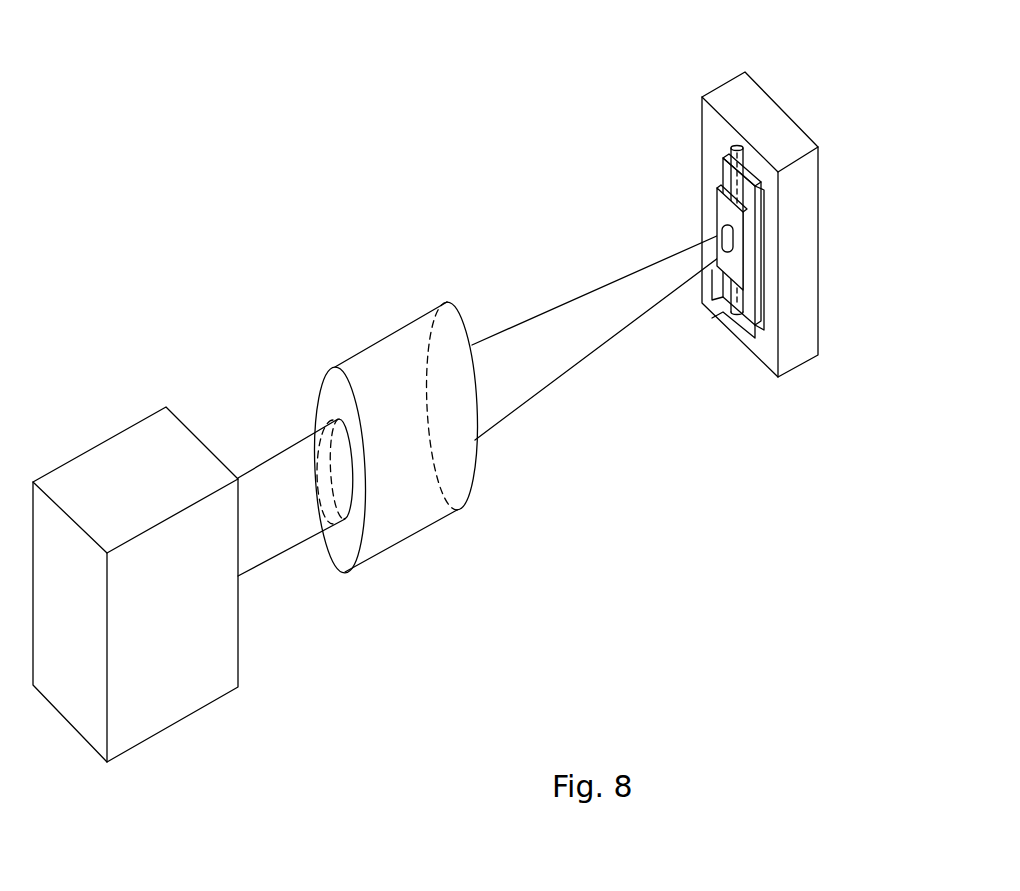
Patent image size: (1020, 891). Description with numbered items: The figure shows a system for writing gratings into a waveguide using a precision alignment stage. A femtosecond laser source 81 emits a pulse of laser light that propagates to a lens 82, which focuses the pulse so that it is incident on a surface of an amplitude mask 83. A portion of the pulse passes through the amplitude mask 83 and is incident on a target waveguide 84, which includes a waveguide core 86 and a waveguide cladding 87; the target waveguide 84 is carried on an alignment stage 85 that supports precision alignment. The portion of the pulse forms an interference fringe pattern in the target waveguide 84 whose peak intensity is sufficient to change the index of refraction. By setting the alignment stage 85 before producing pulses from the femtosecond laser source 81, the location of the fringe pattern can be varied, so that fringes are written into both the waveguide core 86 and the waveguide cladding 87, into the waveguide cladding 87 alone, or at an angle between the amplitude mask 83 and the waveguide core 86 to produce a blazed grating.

The femtosecond laser source 81 is at (68, 461).
The lens 82 is at (362, 351).
The amplitude mask 83 is at (720, 226).
The target waveguide 84 is at (827, 163).
The alignment stage 85 is at (768, 92).
The waveguide core 86 is at (712, 318).
The waveguide cladding 87 is at (745, 298).